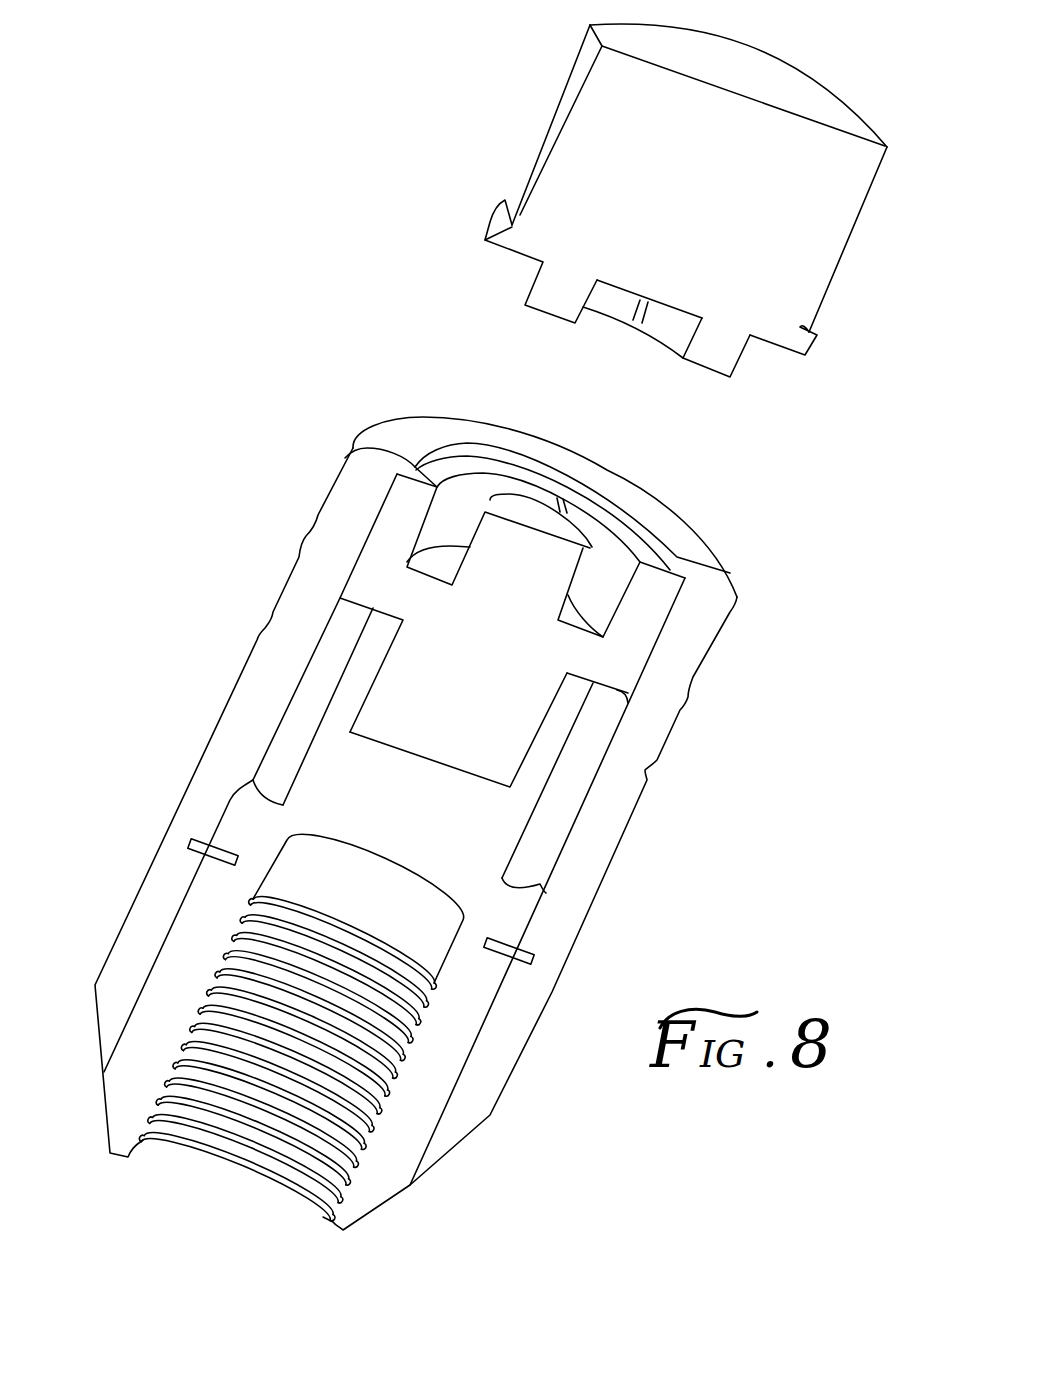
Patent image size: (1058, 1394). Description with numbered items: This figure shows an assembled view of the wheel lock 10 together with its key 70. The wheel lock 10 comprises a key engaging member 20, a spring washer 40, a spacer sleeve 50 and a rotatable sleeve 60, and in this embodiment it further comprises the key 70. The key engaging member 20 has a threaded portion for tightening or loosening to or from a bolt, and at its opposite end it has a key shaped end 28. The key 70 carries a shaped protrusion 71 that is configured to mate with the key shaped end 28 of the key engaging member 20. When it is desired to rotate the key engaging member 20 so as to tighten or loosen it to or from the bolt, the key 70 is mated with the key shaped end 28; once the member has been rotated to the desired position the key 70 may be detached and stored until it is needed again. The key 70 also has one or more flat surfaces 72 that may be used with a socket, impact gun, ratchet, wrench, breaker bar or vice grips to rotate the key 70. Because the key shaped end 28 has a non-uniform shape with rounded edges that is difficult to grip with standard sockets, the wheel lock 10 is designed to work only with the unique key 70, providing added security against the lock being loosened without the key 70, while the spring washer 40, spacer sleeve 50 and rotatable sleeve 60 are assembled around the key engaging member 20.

The wheel lock 10 is at (385, 152).
The key engaging member 20 is at (373, 1173).
The key shaped end 28 is at (485, 512).
The spring washer 40 is at (190, 845).
The spacer sleeve 50 is at (290, 705).
The rotatable sleeve 60 is at (683, 638).
The key 70 is at (768, 83).
The shaped protrusion 71 is at (710, 357).
The flat surfaces 72 is at (548, 128).